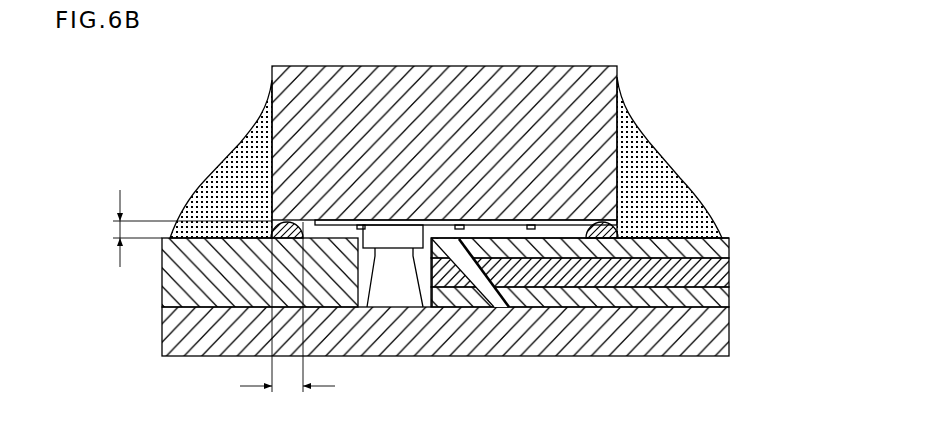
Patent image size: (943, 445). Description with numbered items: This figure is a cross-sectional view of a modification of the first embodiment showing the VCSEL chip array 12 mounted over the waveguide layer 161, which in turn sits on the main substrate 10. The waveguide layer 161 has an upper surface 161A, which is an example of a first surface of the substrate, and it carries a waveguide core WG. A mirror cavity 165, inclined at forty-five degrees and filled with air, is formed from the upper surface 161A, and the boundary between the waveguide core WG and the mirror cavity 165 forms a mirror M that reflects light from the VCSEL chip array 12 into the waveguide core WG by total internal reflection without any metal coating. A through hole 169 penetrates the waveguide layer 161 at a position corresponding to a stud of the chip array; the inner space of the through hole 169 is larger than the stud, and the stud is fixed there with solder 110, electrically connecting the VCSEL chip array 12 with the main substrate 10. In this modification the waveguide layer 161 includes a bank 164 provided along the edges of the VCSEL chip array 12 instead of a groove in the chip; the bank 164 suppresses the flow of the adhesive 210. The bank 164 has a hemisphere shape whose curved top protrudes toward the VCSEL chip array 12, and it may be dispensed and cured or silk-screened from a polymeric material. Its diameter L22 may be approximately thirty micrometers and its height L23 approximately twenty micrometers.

The main substrate 10 is at (162, 333).
The VCSEL chip array 12 is at (598, 66).
The solder 110 is at (437, 292).
The waveguide layer 161 is at (162, 288).
The upper surface 161A is at (662, 237).
The bank 164 is at (272, 226).
The mirror cavity 165 is at (488, 280).
The through hole 169 is at (374, 294).
The adhesive 210 is at (238, 153).
The mirror M is at (503, 292).
The waveguide core WG is at (730, 272).
The diameter of the bank L22 is at (287, 319).
The height of the bank L23 is at (170, 228).